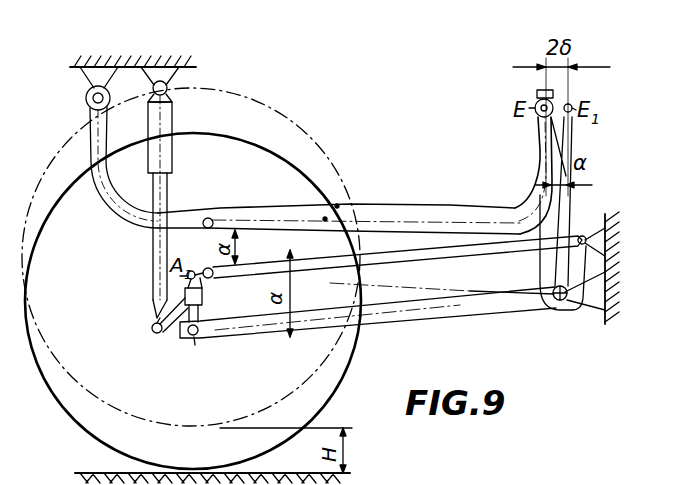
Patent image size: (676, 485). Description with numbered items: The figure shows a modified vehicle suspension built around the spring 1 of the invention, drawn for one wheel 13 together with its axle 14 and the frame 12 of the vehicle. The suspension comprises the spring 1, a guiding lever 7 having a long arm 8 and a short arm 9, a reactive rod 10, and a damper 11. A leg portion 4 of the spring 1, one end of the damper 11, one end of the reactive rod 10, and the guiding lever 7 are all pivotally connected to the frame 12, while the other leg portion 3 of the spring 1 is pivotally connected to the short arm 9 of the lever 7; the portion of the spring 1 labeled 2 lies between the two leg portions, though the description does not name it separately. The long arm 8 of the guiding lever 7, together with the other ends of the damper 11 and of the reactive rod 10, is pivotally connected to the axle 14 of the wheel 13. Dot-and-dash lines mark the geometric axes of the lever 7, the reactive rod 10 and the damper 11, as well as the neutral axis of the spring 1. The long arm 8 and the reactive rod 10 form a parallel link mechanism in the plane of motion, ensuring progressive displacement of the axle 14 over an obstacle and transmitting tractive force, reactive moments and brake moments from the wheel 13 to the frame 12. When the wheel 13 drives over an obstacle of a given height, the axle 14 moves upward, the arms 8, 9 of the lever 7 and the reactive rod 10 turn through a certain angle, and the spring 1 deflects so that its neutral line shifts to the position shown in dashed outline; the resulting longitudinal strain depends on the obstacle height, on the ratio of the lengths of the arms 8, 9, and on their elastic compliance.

The spring 1 is at (355, 187).
The horizontal arm portion 2 is at (399, 212).
The leg portion 3 is at (530, 186).
The leg portion 4 is at (92, 130).
The guiding lever 7 is at (552, 302).
The long arm 8 is at (240, 328).
The short arm 9 is at (563, 226).
The reactive rod 10 is at (456, 242).
The damper 11 is at (152, 245).
The frame 12 is at (180, 59).
The wheel 13 is at (45, 374).
The axle 14 is at (165, 330).